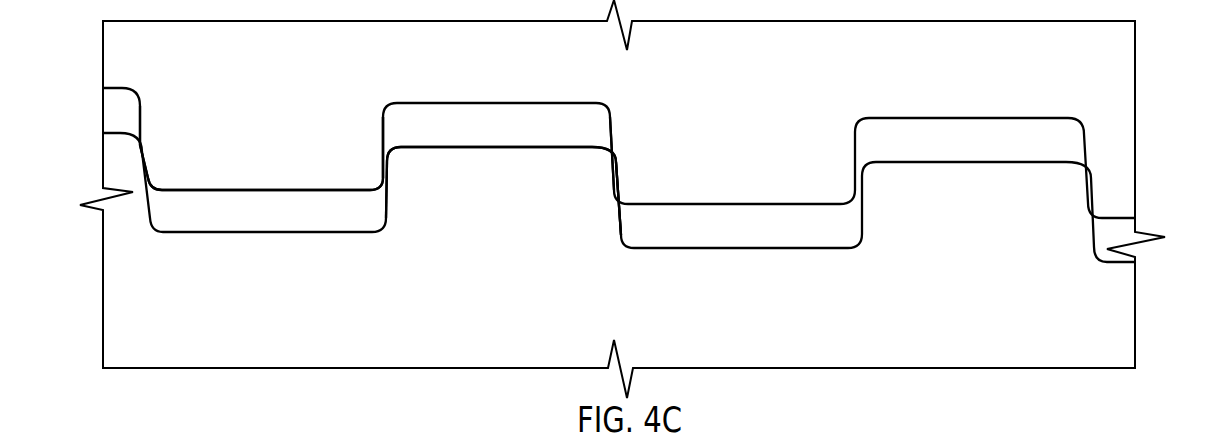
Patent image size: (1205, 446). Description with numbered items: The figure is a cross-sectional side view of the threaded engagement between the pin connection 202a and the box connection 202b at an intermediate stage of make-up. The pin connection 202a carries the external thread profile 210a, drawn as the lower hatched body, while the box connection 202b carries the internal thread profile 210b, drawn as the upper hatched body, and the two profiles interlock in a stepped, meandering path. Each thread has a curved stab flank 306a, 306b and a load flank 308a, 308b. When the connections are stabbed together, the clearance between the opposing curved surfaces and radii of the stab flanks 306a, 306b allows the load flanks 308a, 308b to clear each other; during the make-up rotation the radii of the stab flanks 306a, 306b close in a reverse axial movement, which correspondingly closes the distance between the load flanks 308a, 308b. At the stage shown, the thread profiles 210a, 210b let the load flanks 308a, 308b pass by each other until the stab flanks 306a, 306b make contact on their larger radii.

The pin connection 202a is at (522, 306).
The box connection 202b is at (777, 103).
The external thread profile 210a is at (561, 146).
The internal thread profile 210b is at (245, 191).
The stab flank 306a is at (621, 228).
The stab flank 306b is at (609, 127).
The load flank 308a is at (386, 217).
The load flank 308b is at (383, 120).